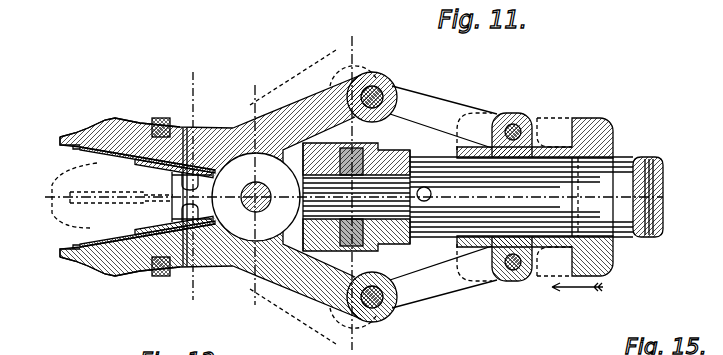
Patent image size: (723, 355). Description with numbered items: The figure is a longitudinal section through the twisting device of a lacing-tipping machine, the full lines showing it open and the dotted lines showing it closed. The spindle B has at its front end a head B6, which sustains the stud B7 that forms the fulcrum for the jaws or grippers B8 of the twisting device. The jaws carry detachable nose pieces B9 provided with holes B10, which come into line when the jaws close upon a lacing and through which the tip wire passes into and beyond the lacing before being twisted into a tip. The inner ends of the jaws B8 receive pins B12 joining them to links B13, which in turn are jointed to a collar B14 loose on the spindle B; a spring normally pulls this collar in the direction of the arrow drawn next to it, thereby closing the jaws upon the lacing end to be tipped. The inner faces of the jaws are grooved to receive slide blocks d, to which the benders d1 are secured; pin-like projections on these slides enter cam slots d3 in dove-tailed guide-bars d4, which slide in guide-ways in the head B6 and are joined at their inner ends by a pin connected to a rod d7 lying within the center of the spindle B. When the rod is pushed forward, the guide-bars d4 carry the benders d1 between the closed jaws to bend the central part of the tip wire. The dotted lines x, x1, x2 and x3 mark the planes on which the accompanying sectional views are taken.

The spindle B is at (628, 155).
The head B6 is at (280, 272).
The stud B7 is at (253, 213).
The jaws of the twisting device B8 is at (222, 115).
The detachable nose pieces B9 is at (113, 118).
The holes B10 is at (62, 137).
The pins B12 is at (388, 74).
The links B13 is at (456, 104).
The collar B14 is at (600, 108).
The slide blocks d is at (137, 161).
The benders d1 is at (80, 296).
The cam slots d3 is at (185, 128).
The guide-bars d4 is at (180, 212).
The rod d7 is at (664, 174).
The section line x is at (678, 197).
The section line x1 is at (345, 187).
The section line x2 is at (252, 187).
The section line x3 is at (176, 178).